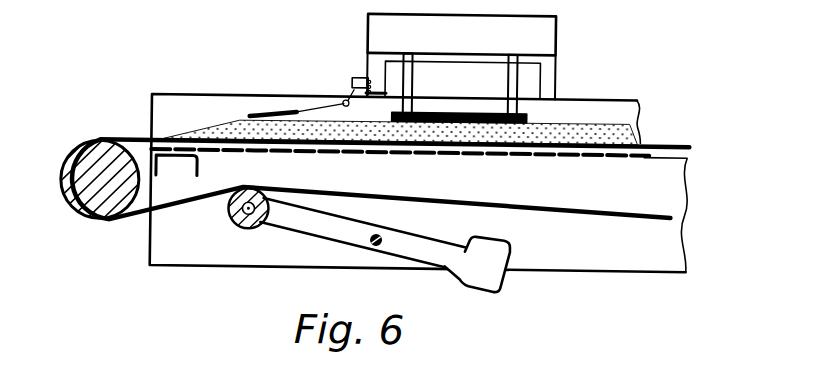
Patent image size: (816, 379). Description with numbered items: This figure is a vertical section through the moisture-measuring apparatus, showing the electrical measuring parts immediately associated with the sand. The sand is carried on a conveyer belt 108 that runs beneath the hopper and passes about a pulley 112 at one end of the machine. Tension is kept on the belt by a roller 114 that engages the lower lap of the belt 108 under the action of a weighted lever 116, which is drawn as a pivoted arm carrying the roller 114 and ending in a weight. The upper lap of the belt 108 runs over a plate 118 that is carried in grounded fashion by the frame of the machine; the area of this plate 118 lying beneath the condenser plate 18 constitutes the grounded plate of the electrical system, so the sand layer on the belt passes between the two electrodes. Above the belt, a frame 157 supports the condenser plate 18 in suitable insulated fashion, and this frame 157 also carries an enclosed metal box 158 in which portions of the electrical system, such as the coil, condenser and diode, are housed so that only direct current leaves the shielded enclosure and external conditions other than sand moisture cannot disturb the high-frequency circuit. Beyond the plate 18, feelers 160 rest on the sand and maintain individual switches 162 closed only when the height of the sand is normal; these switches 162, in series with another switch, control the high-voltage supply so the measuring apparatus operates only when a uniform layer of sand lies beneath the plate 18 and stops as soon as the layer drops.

The condenser plate 18 is at (527, 111).
The conveyer belt 108 is at (122, 138).
The pulley 112 is at (78, 208).
The roller 114 is at (233, 219).
The weighted lever 116 is at (431, 254).
The plate 118 is at (423, 152).
The frame 157 is at (556, 66).
The enclosed metal box 158 is at (375, 27).
The feelers 160 is at (265, 113).
The switches 162 is at (357, 75).